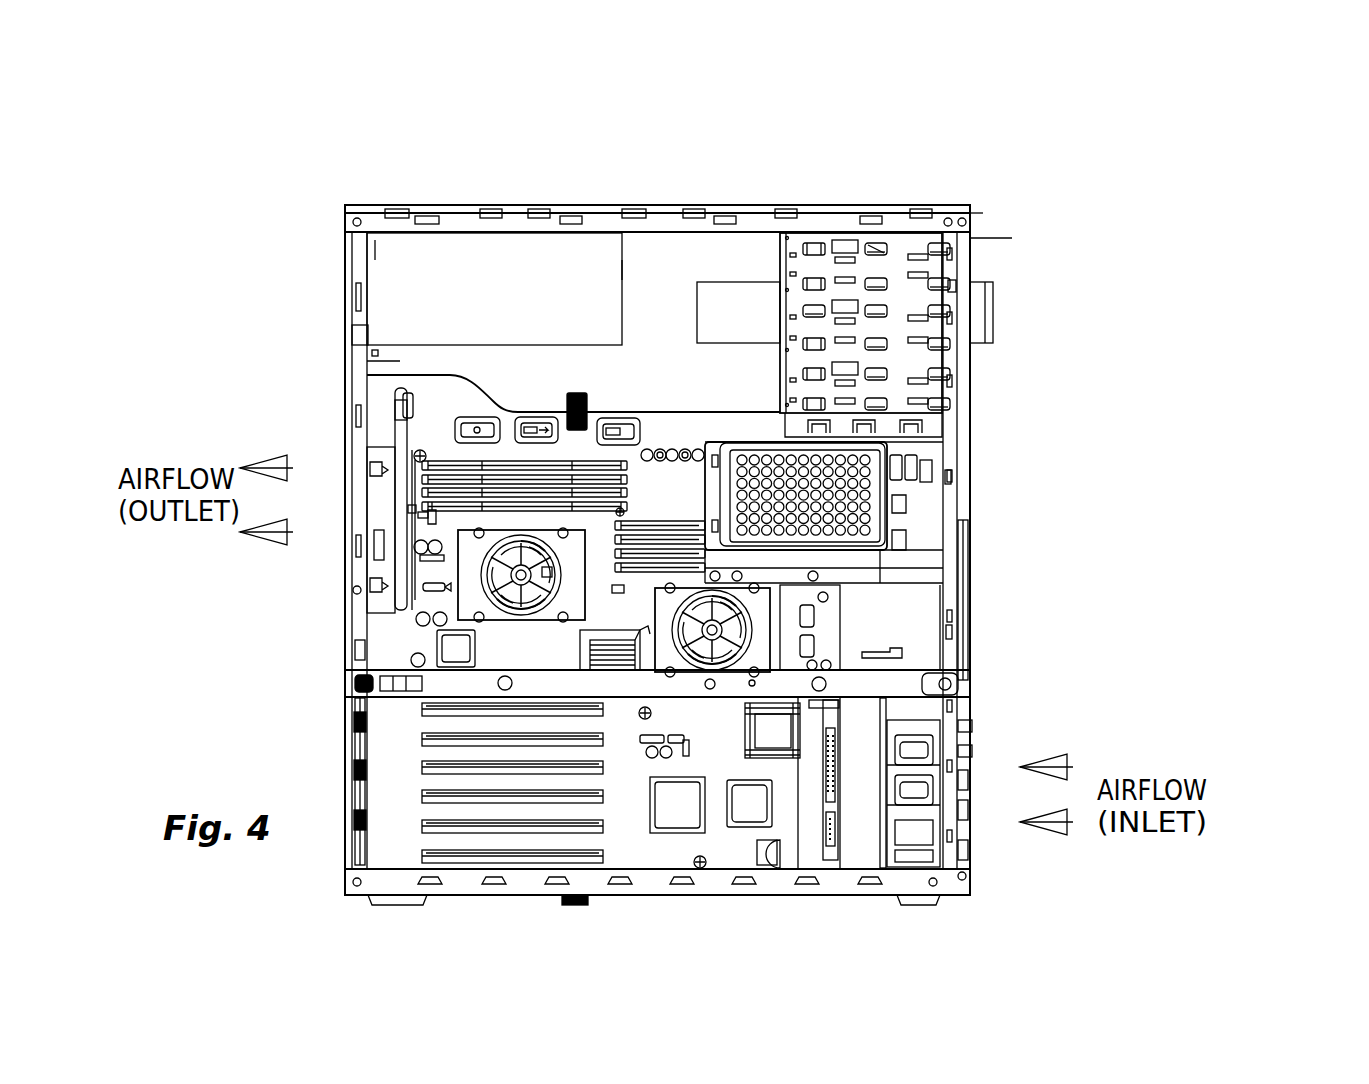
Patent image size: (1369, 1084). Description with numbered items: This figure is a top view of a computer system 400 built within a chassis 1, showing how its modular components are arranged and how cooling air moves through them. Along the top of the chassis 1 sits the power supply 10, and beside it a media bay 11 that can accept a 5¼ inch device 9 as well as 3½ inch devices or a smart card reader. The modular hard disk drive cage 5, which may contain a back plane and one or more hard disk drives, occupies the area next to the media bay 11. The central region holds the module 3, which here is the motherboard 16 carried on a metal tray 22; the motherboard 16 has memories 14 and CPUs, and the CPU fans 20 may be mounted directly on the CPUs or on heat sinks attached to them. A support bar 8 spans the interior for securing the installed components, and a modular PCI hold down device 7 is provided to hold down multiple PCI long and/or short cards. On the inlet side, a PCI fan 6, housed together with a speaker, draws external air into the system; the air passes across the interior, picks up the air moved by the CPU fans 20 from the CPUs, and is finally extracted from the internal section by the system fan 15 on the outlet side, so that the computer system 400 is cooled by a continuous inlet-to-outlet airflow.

The computer system 400 is at (1185, 120).
The chassis 1 is at (678, 497).
The power supply 10 is at (573, 194).
The module 3 is at (573, 244).
The metal tray 22 is at (756, 280).
The motherboard 16 is at (818, 289).
The media bay 11 is at (968, 272).
The 5¼ inch device 9 is at (1068, 277).
The modular hard disk drive cage 5 is at (950, 449).
The memories 14 is at (431, 420).
The CPU fans 20 is at (700, 529).
The system fan 15 is at (286, 500).
The support bar 8 is at (967, 572).
The modular PCI hold down device 7 is at (1015, 690).
The PCI fan 6 is at (1032, 728).